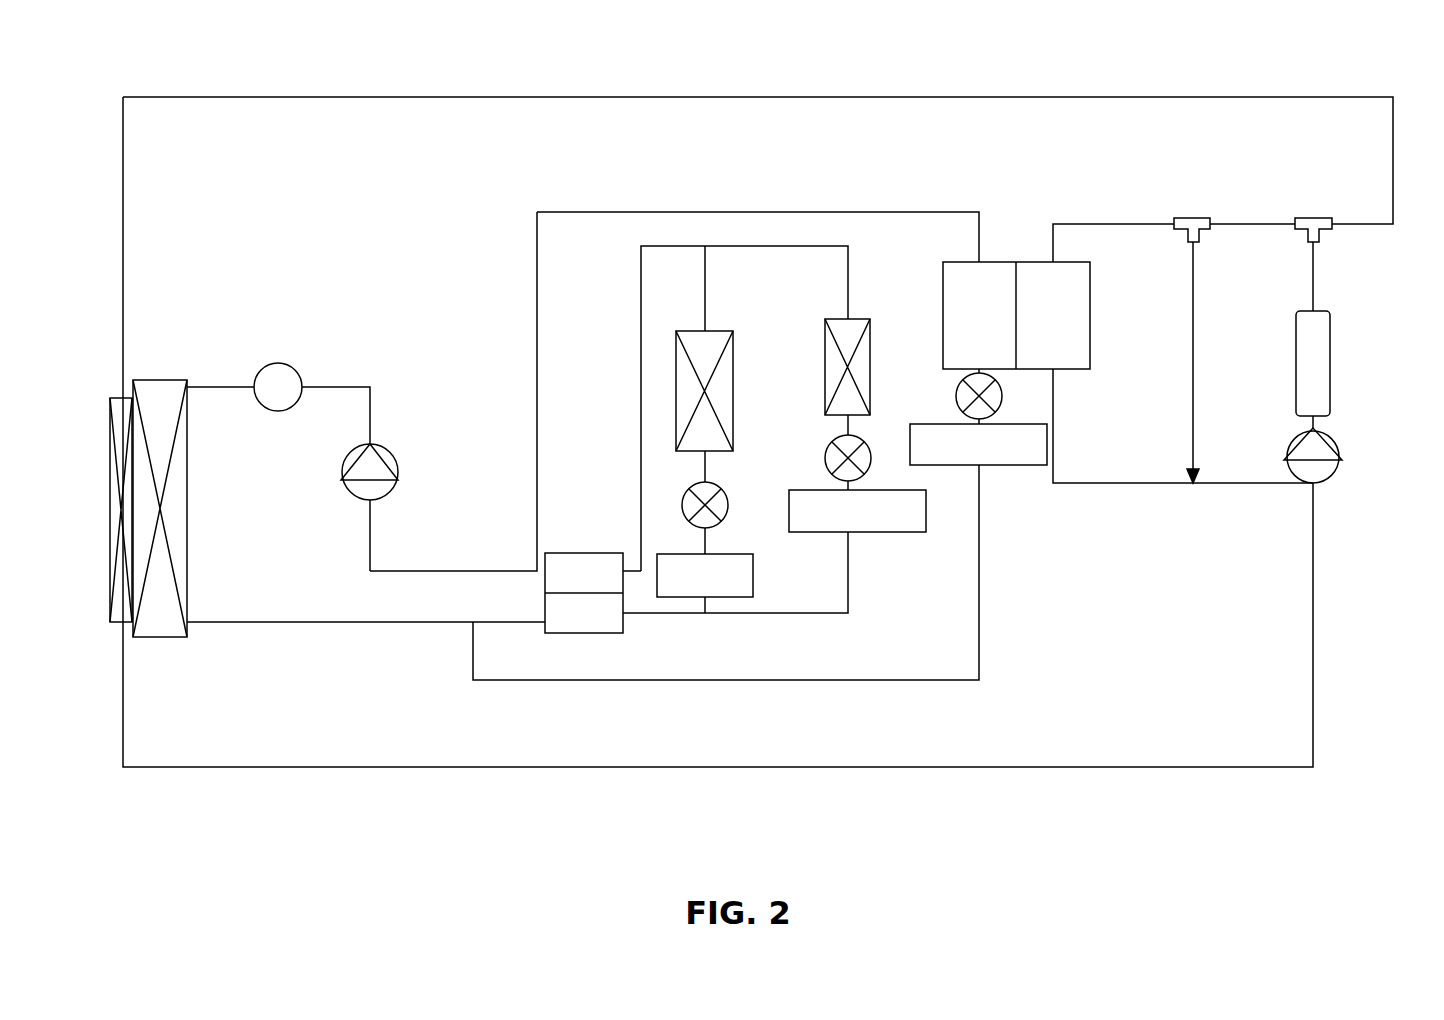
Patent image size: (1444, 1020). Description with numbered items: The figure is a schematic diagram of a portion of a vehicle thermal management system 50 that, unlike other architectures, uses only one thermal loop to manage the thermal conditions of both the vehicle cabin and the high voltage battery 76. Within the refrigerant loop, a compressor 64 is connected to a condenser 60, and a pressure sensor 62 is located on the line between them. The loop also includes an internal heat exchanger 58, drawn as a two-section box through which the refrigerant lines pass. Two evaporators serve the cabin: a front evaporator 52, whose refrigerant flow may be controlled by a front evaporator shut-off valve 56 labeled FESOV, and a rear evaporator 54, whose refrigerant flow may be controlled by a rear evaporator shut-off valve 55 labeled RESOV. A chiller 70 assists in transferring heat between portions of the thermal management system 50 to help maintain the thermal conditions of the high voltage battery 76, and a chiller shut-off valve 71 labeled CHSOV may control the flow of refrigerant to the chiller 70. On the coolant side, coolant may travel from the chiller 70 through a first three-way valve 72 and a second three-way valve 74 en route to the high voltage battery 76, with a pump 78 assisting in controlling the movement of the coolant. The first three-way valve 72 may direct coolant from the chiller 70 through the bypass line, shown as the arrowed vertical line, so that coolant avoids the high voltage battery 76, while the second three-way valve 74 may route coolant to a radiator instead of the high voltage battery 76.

The thermal management system 50 is at (962, 54).
The front evaporator 52 is at (710, 455).
The rear evaporator 54 is at (823, 343).
The rear evaporator shut-off valve 55 is at (824, 457).
The front evaporator shut-off valve 56 is at (683, 513).
The internal heat exchanger 58 is at (576, 553).
The condenser 60 is at (187, 608).
The pressure sensor 62 is at (296, 370).
The compressor 64 is at (348, 487).
The chiller 70 is at (942, 312).
The chiller shut-off valve 71 is at (956, 398).
The first three-way valve 72 is at (1193, 218).
The second three-way valve 74 is at (1322, 218).
The high voltage battery 76 is at (1330, 393).
The pump 78 is at (1322, 475).